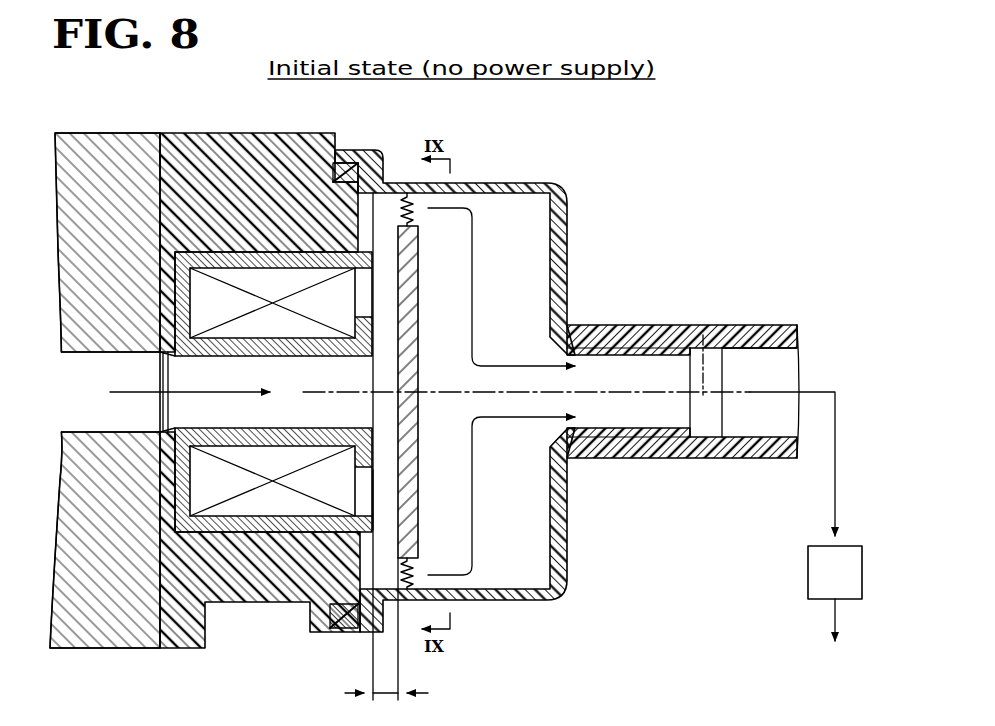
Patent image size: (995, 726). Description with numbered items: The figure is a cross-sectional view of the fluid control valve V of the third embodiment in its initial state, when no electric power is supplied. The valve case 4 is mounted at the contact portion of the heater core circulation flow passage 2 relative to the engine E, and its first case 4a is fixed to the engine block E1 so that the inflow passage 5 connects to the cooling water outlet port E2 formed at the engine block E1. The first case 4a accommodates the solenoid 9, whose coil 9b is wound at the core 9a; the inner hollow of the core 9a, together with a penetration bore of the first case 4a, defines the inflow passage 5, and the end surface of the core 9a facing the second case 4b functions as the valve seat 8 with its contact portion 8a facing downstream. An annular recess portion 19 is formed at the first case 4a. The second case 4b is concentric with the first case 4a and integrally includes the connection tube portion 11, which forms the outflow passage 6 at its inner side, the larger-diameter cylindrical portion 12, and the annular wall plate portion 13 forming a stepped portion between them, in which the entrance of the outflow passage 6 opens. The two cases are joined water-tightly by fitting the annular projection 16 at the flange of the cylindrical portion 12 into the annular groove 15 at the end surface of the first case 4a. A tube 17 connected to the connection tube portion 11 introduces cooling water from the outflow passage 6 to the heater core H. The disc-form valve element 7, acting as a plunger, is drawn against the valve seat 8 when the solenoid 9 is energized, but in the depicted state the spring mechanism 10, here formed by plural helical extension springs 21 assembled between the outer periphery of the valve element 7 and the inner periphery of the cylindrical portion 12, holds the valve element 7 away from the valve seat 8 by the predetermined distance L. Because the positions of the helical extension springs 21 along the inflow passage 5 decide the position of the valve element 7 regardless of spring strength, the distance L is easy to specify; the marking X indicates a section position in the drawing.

The engine block E1 is at (86, 140).
The engine E is at (105, 373).
The cooling water outlet port E2 is at (78, 414).
The valve case 4 is at (373, 373).
The first case 4a is at (206, 140).
The second case 4b is at (457, 388).
The annular projection 16 is at (344, 168).
The solenoid 9 is at (273, 391).
The annular groove 15 is at (340, 188).
The core 9a is at (290, 527).
The coil 9b is at (266, 506).
The annular recess portion 19 is at (337, 544).
The inflow passage 5 is at (224, 415).
The valve element 7 is at (416, 279).
The valve seat 8 is at (380, 297).
The contact portion 8a is at (373, 498).
The helical extension spring 21 is at (405, 198).
The spring mechanism 10 is at (463, 386).
The outflow passage 6 is at (680, 385).
The connection tube portion 11 is at (655, 458).
The tube 17 is at (760, 328).
The section position X is at (705, 330).
The cylindrical portion 12 is at (535, 601).
The wall plate portion 13 is at (567, 548).
The heater core circulation flow passage 2 is at (835, 499).
The heater core H is at (808, 578).
The fluid control valve V is at (696, 222).
The predetermined distance L is at (386, 640).